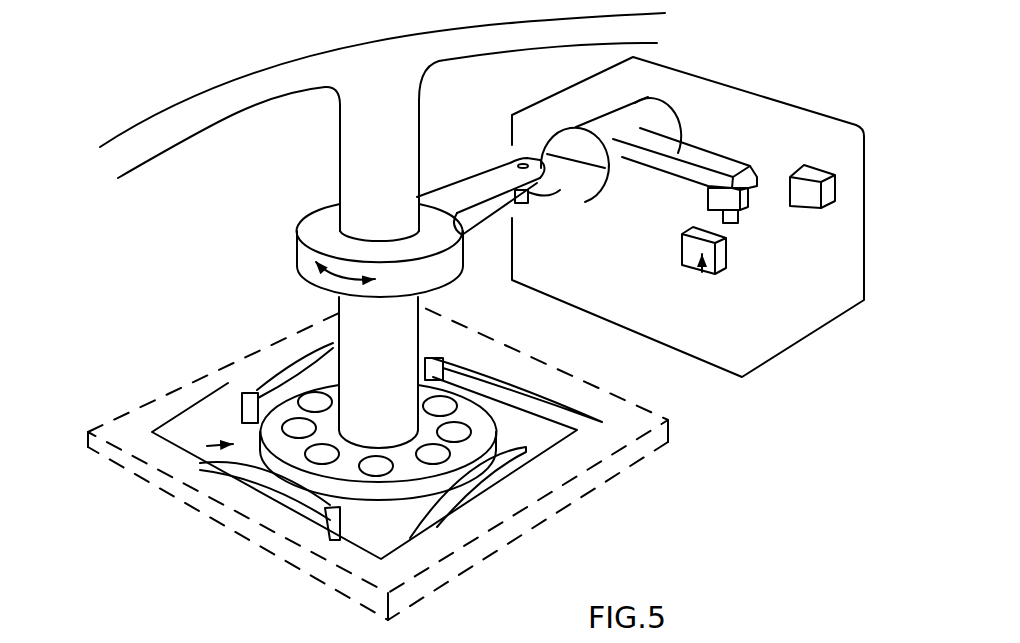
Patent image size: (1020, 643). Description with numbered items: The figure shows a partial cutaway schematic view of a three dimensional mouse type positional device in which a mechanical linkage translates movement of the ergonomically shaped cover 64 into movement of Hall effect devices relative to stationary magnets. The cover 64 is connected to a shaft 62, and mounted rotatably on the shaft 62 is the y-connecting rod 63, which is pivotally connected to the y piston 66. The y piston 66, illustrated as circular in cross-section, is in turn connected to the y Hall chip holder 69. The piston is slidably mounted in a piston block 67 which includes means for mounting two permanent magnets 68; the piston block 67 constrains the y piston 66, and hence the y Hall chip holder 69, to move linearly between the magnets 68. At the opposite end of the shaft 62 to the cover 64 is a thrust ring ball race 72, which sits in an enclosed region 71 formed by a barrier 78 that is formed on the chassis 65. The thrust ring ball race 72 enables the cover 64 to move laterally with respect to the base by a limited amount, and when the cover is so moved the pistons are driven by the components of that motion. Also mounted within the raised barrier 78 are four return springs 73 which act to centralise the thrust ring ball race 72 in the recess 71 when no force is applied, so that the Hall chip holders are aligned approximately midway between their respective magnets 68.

The shaft 62 is at (373, 330).
The y-connecting rod 63 is at (323, 232).
The cover 64 is at (165, 132).
The chassis 65 is at (211, 605).
The y piston 66 is at (636, 112).
The piston block 67 is at (707, 112).
The permanent magnets 68 is at (802, 192).
The y Hall chip holder 69 is at (744, 221).
The enclosed region 71 is at (253, 402).
The thrust ring ball race 72 is at (277, 417).
The return springs 73 is at (250, 386).
The barrier 78 is at (633, 428).